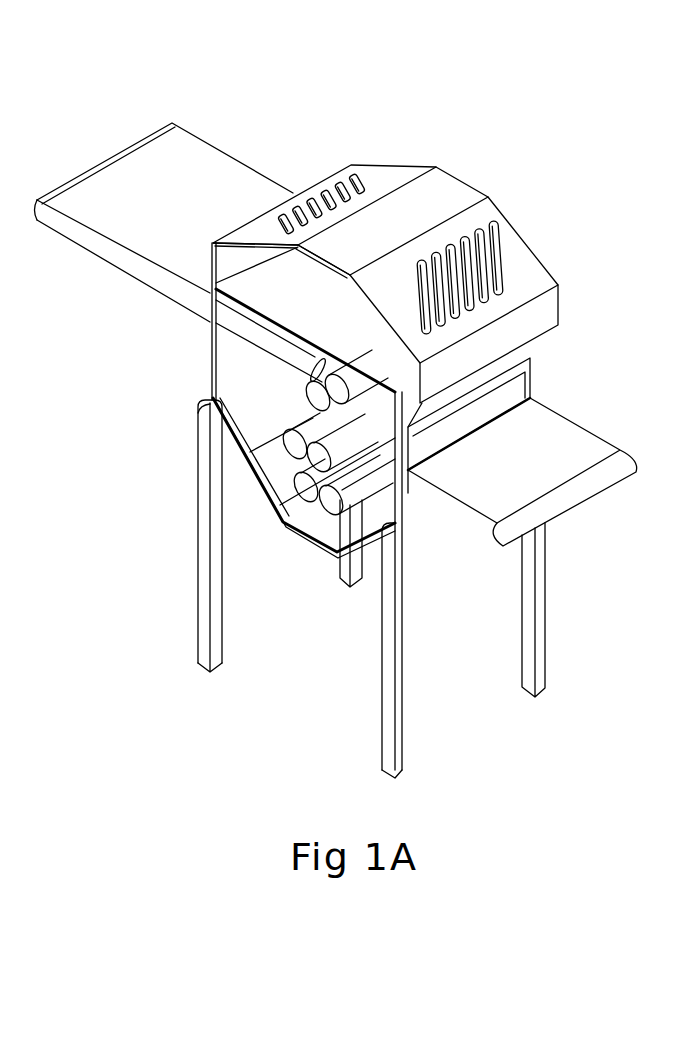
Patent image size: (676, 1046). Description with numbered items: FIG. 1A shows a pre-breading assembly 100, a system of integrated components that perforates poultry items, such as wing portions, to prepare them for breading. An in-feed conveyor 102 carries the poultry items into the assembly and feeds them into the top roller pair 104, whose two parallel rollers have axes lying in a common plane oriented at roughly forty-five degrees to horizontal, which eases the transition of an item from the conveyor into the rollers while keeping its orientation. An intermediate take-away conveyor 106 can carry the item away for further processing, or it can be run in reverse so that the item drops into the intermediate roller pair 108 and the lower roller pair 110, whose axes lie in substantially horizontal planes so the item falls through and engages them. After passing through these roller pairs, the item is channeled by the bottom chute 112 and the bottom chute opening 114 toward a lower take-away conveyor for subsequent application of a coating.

The pre-breading assembly 100 is at (433, 103).
The in-feed conveyor 102 is at (207, 128).
The top roller pair 104 is at (307, 398).
The intermediate take-away conveyor 106 is at (368, 538).
The intermediate roller pair 108 is at (287, 455).
The lower roller pair 110 is at (278, 482).
The bottom chute 112 is at (251, 445).
The bottom chute opening 114 is at (325, 532).